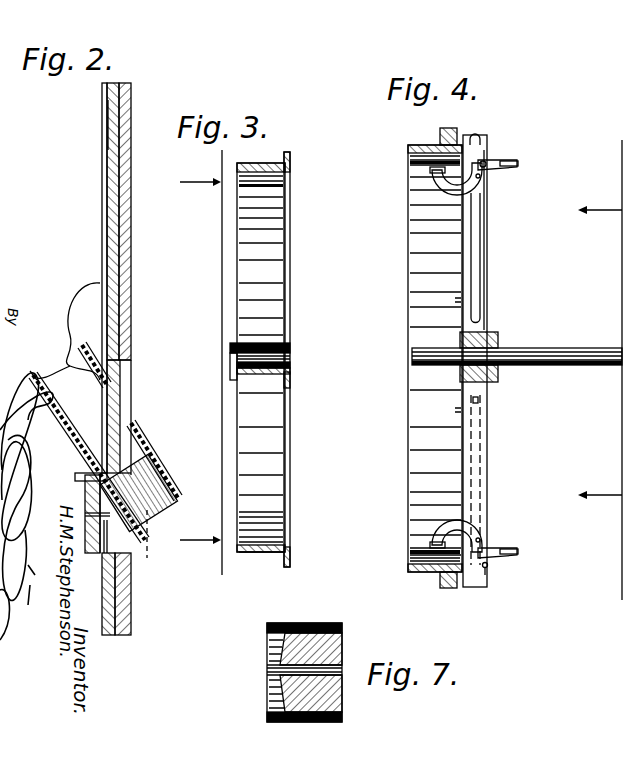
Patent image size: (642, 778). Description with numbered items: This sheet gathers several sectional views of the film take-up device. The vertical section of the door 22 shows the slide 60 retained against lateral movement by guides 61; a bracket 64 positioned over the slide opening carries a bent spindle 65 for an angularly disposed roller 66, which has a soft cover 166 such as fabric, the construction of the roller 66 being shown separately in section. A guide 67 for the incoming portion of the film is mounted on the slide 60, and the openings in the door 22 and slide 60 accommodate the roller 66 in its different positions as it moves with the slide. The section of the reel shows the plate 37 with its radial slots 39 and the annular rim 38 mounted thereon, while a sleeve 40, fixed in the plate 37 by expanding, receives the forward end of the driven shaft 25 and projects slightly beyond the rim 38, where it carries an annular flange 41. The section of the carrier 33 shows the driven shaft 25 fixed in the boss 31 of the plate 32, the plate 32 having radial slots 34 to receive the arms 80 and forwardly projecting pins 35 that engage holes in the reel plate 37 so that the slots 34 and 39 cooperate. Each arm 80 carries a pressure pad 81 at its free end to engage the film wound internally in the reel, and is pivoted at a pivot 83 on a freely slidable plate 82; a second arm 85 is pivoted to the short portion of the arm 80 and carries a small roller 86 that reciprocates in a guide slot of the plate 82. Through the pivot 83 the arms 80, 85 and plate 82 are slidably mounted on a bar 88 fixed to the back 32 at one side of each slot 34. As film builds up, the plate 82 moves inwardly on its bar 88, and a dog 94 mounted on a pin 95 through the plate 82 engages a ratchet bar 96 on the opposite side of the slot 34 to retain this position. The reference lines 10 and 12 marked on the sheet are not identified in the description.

In FIG. 4, the frame line 10 is at (600, 370).
In FIG. 3, the axis line 12 is at (201, 362).
In FIG. 2, the door 22 is at (132, 112).
In FIG. 4, the driven shaft 25 is at (548, 352).
In FIG. 4, the boss 31 is at (497, 338).
In FIG. 4, the plate 32 is at (455, 236).
In FIG. 4, the carrier 33 is at (422, 160).
In FIG. 4, the radial slots 34 is at (466, 275).
In FIG. 4, the pins 35 is at (456, 300).
In FIG. 3, the plate 37 is at (289, 380).
In FIG. 3, the annular rim 38 is at (256, 553).
In FIG. 3, the radial slots 39 is at (288, 434).
In FIG. 3, the sleeve 40 is at (245, 343).
In FIG. 3, the annular flange 41 is at (231, 345).
In FIG. 2, the slide 60 is at (114, 125).
In FIG. 2, the guides 61 is at (103, 150).
In FIG. 2, the bracket 64 is at (98, 458).
In FIG. 2, the bent spindle 65 is at (160, 558).
In FIG. 2, the roller 66 is at (163, 488).
In FIG. 7, the roller 66 is at (330, 648).
In FIG. 2, the guide 67 is at (76, 298).
In FIG. 4, the arms 80 is at (485, 185).
In FIG. 4, the pressure pads 81 is at (430, 171).
In FIG. 4, the plate 82 is at (506, 160).
In FIG. 4, the pivot 83 is at (478, 160).
In FIG. 4, the second arm 85 is at (500, 168).
In FIG. 4, the small roller 86 is at (519, 164).
In FIG. 4, the bar 88 is at (482, 292).
In FIG. 4, the dog 94 is at (487, 576).
In FIG. 4, the pin 95 is at (488, 568).
In FIG. 4, the ratchet bar 96 is at (484, 422).
In FIG. 7, the soft cover 166 is at (332, 610).